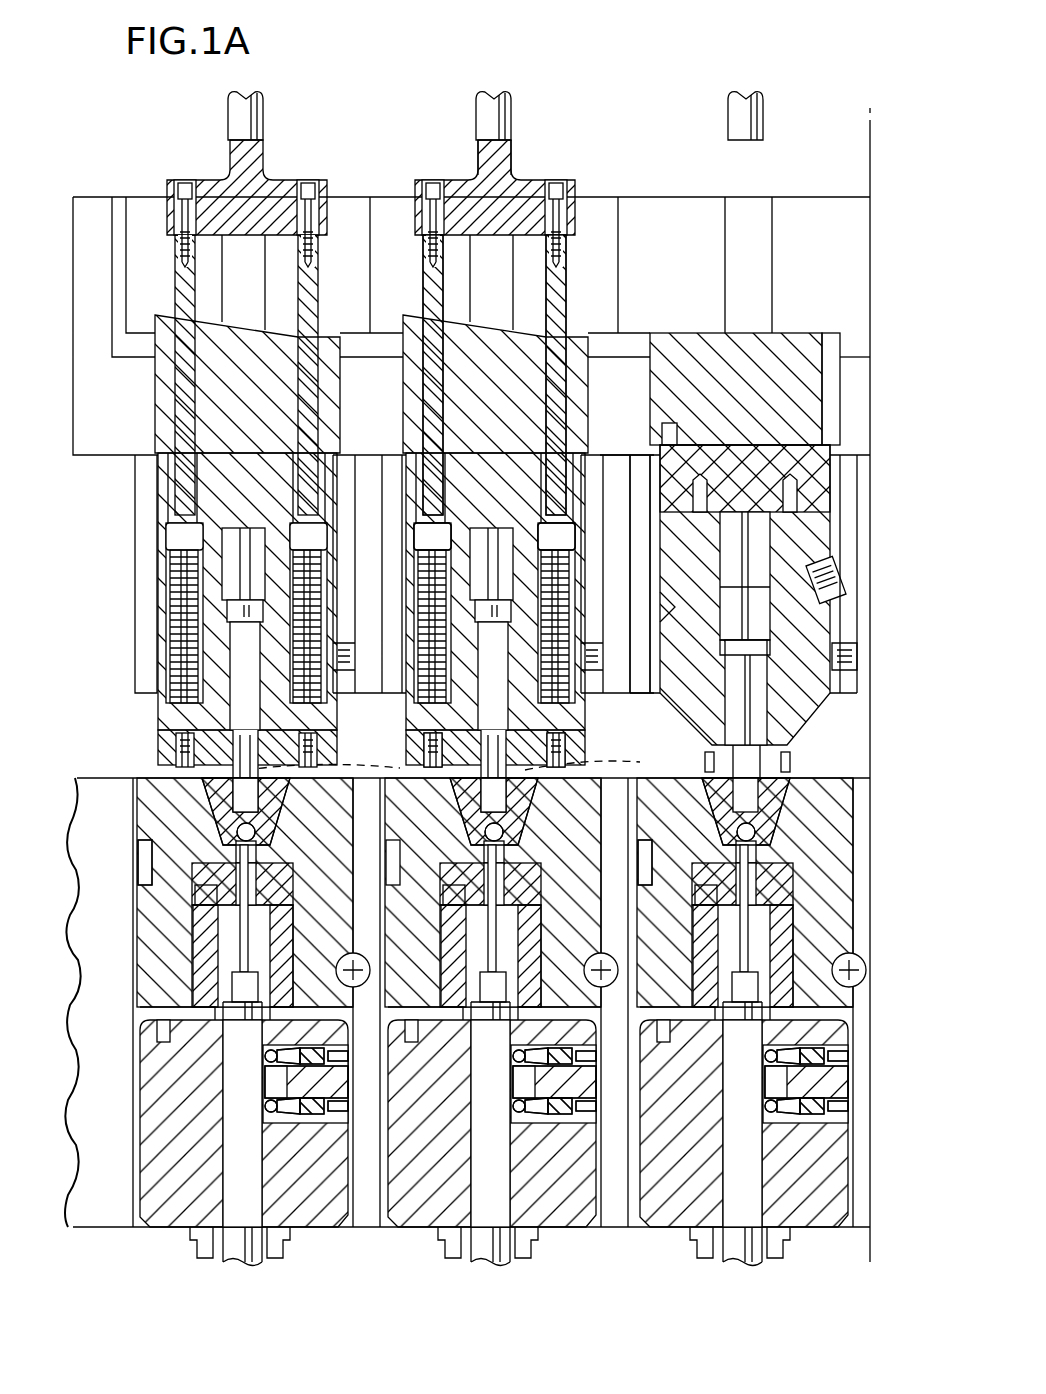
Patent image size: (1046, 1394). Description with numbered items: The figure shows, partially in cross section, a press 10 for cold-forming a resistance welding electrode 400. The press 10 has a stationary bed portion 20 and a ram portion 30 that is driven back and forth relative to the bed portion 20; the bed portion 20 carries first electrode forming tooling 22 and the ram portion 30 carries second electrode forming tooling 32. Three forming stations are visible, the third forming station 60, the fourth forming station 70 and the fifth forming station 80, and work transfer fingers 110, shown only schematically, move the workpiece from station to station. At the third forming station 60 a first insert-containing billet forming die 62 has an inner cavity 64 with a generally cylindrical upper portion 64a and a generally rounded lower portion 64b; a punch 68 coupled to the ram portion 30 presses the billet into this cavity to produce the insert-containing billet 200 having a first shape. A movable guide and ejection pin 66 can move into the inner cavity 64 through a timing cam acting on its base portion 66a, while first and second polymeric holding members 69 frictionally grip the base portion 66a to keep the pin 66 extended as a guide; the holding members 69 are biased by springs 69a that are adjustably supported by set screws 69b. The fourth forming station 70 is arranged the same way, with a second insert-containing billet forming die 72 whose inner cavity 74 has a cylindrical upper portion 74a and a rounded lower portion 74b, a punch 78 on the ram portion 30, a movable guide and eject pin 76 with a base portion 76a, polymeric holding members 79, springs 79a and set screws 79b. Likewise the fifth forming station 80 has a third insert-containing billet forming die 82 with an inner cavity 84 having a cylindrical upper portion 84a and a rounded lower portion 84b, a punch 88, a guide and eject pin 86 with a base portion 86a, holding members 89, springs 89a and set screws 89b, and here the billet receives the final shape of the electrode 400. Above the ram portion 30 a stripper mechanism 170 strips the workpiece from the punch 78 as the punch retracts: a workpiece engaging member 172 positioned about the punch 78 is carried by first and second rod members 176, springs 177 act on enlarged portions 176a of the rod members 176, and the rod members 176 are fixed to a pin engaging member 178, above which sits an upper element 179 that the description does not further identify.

The press 10 is at (632, 145).
The stationary bed portion 20 is at (100, 1025).
The first electrode forming tooling 22 is at (135, 762).
The ram portion 30 is at (100, 426).
The second electrode forming tooling 32 is at (125, 563).
The third forming station 60 is at (848, 742).
The first insert-containing billet forming die 62 is at (756, 836).
The inner cavity 64 is at (778, 814).
The generally cylindrical upper portion 64a is at (720, 800).
The generally rounded lower portion 64b is at (715, 848).
The movable guide and ejection pin 66 is at (740, 948).
The base portion 66a is at (748, 1255).
The punch 68 is at (790, 786).
The polymeric holding members 69 is at (770, 1106).
The seal ring 69a is at (825, 1092).
The set screws 69b is at (835, 1055).
The fourth forming station 70 is at (598, 752).
The second insert-containing billet forming die 72 is at (504, 833).
The inner cavity 74 is at (468, 855).
The generally cylindrical upper portion 74a is at (468, 800).
The generally rounded lower portion 74b is at (520, 848).
The movable guide and eject pin 76 is at (488, 950).
The base portion 76a is at (492, 1260).
The punch 78 is at (480, 812).
The polymeric holding members 79 is at (518, 1106).
The seal ring 79a is at (575, 1092).
The set screws 79b is at (583, 1055).
The fifth forming station 80 is at (125, 700).
The third insert-containing billet forming die 82 is at (256, 835).
The inner cavity 84 is at (270, 870).
The generally cylindrical upper portion 84a is at (262, 818).
The generally rounded lower portion 84b is at (196, 900).
The movable guide and eject pin 86 is at (240, 955).
The base portion 86a is at (240, 1250).
The punch 88 is at (200, 792).
The polymeric holding members 89 is at (270, 1106).
The springs 89a is at (325, 1092).
The set screws 89b is at (335, 1055).
The work transfer fingers 110 is at (165, 745).
The stripper mechanism 170 is at (283, 165).
The workpiece engaging member 172 is at (262, 785).
The rod members 176 is at (440, 320).
The enlarged portions 176a is at (560, 535).
The springs 177 is at (480, 700).
The pin engaging member 178 is at (480, 165).
The knob 179 is at (512, 95).
The insert-containing billet having a first shape 200 is at (790, 830).
The resistance welding electrode 400 is at (225, 832).